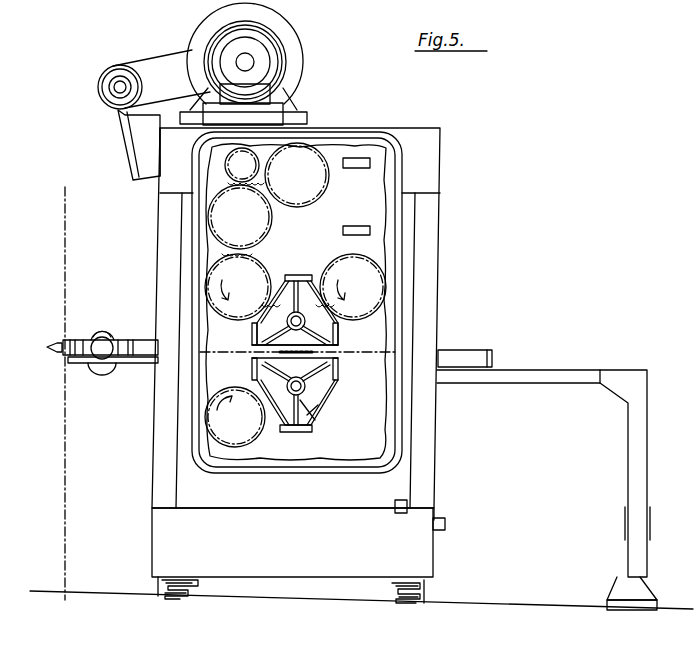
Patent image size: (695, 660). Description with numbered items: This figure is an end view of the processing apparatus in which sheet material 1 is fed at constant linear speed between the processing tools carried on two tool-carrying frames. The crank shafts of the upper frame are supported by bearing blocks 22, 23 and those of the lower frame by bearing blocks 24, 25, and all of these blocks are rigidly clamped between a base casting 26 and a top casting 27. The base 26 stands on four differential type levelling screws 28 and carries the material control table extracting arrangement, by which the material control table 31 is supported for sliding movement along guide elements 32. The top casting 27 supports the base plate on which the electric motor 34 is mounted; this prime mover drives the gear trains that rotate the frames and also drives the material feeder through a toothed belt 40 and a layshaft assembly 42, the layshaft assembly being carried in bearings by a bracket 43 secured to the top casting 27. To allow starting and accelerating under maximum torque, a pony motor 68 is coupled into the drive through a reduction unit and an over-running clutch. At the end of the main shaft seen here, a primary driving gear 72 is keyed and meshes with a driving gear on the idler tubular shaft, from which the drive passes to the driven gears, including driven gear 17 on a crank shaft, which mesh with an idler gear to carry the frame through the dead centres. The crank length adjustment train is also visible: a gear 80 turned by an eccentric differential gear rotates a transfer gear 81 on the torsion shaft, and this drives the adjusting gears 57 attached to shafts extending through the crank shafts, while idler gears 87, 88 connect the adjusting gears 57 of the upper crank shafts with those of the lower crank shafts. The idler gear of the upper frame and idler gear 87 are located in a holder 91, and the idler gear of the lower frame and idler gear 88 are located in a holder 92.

The material 1 is at (47, 347).
The driven gear 17 is at (372, 274).
The bearing block 22 is at (195, 252).
The bearing block 23 is at (378, 213).
The bearing block 24 is at (209, 472).
The bearing block 25 is at (386, 499).
The base casting 26 is at (330, 574).
The top casting 27 is at (432, 160).
The differential type levelling screws 28 is at (192, 584).
The material control table 31 is at (474, 349).
The guide elements 32 is at (546, 370).
The electric motor 34 is at (290, 32).
The toothed belt 40 is at (167, 54).
The layshaft assembly 42 is at (117, 70).
The bracket 43 is at (140, 155).
The adjusting gears 57 is at (261, 277).
The pony motor 68 is at (264, 52).
The primary driving gear 72 is at (232, 162).
The gear 80 is at (302, 160).
The transfer gear 81 is at (256, 222).
The idler gear 87 is at (298, 277).
The idler gear 88 is at (325, 401).
The holder 91 is at (320, 323).
The holder 92 is at (310, 412).